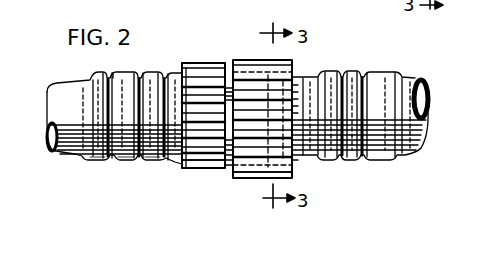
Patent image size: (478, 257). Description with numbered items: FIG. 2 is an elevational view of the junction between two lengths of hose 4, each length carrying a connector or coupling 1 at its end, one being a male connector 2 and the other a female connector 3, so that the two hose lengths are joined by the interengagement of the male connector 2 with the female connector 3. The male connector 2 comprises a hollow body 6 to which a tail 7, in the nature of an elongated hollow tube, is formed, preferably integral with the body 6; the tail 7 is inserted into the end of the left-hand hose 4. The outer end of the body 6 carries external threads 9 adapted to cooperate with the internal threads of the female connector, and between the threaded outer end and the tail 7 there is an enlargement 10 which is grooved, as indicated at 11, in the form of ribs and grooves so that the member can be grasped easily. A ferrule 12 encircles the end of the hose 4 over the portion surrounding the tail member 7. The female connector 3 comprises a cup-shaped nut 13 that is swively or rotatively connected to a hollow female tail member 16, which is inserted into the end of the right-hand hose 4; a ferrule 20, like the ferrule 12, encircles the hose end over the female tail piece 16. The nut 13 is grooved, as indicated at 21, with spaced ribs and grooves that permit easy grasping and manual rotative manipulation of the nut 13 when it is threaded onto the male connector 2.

The connector or coupling 1 is at (300, 58).
The male connector 2 is at (199, 174).
The female connector 3 is at (300, 167).
The hose 4 is at (70, 153).
The hollow body 6 is at (194, 64).
The tail 7 is at (115, 160).
The external threads 9 is at (228, 70).
The enlargement 10 is at (197, 63).
The grooves 11 is at (203, 160).
The ferrule 12 is at (110, 79).
The nut 13 is at (246, 62).
The female tail member 16 is at (385, 85).
The ferrule 20 is at (350, 72).
The grooving 21 is at (258, 163).